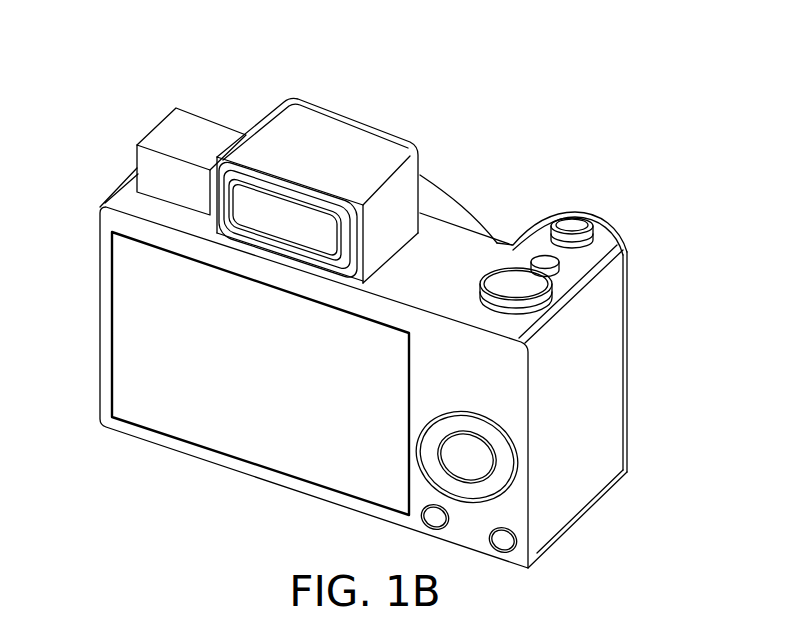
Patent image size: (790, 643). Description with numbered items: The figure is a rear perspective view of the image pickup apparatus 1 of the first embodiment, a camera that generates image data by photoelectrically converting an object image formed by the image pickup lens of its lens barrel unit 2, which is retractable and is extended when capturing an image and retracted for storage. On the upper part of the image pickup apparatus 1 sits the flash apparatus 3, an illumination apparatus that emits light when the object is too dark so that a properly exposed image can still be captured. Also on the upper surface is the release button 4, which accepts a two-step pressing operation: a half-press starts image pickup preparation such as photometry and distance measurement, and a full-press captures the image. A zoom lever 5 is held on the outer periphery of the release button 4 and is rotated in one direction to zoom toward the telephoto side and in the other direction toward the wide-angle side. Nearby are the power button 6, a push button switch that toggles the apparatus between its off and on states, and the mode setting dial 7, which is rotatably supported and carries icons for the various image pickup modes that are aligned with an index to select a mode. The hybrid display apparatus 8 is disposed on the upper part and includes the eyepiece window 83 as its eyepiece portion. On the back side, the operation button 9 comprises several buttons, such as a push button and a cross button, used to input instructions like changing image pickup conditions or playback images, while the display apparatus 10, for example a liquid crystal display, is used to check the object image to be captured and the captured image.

The image pickup apparatus 1 is at (697, 80).
The lens barrel unit 2 is at (463, 200).
The flash apparatus 3 is at (170, 157).
The release button 4 is at (597, 232).
The zoom lever 5 is at (592, 218).
The power button 6 is at (560, 268).
The mode setting dial 7 is at (548, 300).
The hybrid display apparatus 8 is at (366, 133).
The eyepiece window 83 is at (265, 207).
The operation button 9 is at (517, 483).
The display apparatus 10 is at (205, 410).